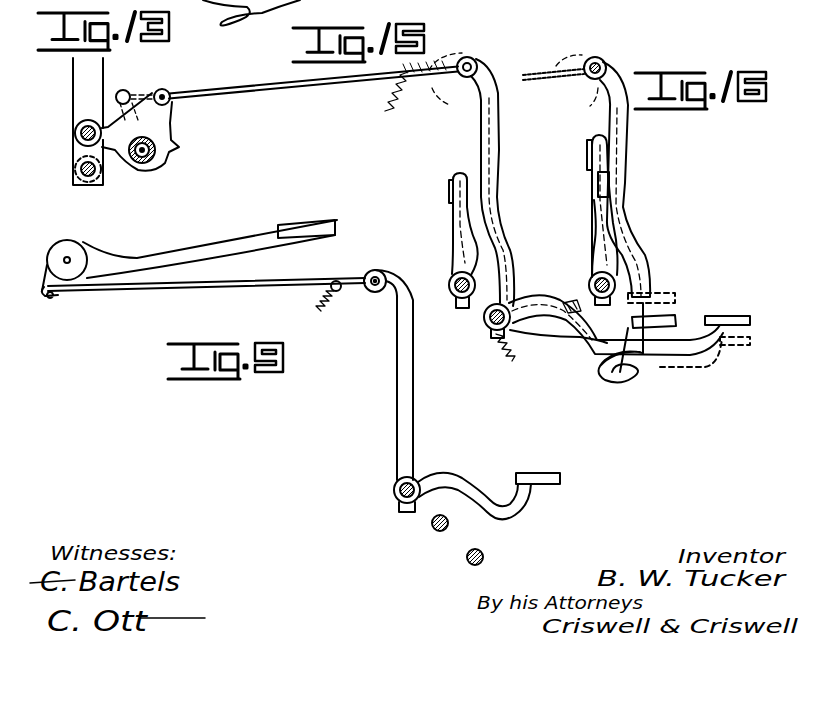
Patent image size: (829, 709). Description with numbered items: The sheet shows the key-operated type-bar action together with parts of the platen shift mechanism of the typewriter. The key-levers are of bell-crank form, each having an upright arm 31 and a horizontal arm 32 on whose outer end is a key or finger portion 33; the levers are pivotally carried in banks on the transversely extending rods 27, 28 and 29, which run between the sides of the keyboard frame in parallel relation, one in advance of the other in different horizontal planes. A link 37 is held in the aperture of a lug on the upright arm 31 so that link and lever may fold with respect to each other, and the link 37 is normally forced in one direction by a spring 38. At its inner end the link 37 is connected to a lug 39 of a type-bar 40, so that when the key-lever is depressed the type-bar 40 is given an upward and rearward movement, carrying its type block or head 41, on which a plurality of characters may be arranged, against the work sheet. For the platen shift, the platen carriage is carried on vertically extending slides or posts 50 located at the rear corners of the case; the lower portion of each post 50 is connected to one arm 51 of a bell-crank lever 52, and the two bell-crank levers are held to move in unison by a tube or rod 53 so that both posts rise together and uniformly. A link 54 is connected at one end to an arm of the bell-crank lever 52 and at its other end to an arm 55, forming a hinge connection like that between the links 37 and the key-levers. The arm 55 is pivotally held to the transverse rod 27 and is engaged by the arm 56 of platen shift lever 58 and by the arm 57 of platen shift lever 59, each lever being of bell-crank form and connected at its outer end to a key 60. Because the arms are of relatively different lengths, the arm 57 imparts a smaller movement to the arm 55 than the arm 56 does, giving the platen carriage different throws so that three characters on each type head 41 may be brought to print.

In FIG. 15, the transverse rod 27 is at (452, 303).
In FIG. 9, the transverse rod 27 is at (393, 496).
In FIG. 15, the transverse rod 28 is at (483, 329).
In FIG. 9, the transverse rod 28 is at (431, 530).
In FIG. 9, the transverse rod 29 is at (466, 562).
In FIG. 9, the upright arm 31 is at (396, 400).
In FIG. 9, the horizontal arm 32 is at (452, 473).
In FIG. 9, the key or finger portion 33 is at (531, 473).
In FIG. 9, the link 37 is at (290, 292).
In FIG. 9, the spring 38 is at (325, 308).
In FIG. 9, the lug 39 is at (45, 297).
In FIG. 9, the type-bar 40 is at (195, 252).
In FIG. 9, the type block or head 41 is at (292, 218).
In FIG. 13, the slide or post 50 is at (79, 85).
In FIG. 13, the arm of bell-crank lever 51 is at (117, 152).
In FIG. 13, the bell-crank lever 52 is at (175, 147).
In FIG. 13, the tube or rod 53 is at (158, 170).
In FIG. 15, the link 54 is at (268, 91).
In FIG. 15, the arm 55 is at (480, 66).
In FIG. 15, the arm of platen shift lever 56 is at (492, 247).
In FIG. 15, the arm of platen shift lever 57 is at (455, 220).
In FIG. 15, the platen shift lever 58 is at (549, 335).
In FIG. 15, the platen shift lever 59 is at (545, 299).
In FIG. 16, the key 60 is at (728, 317).